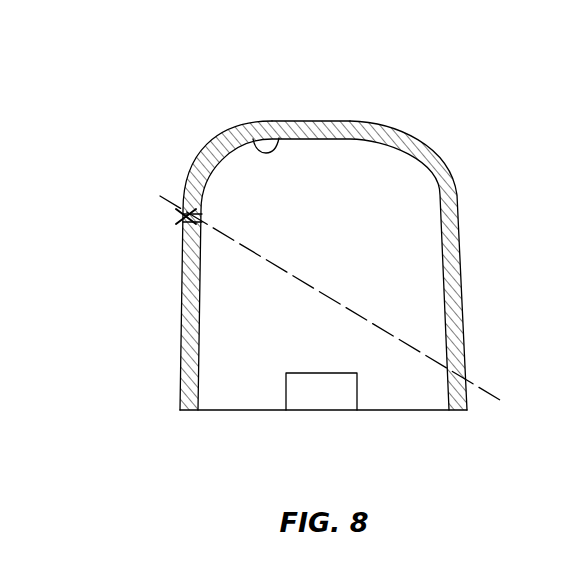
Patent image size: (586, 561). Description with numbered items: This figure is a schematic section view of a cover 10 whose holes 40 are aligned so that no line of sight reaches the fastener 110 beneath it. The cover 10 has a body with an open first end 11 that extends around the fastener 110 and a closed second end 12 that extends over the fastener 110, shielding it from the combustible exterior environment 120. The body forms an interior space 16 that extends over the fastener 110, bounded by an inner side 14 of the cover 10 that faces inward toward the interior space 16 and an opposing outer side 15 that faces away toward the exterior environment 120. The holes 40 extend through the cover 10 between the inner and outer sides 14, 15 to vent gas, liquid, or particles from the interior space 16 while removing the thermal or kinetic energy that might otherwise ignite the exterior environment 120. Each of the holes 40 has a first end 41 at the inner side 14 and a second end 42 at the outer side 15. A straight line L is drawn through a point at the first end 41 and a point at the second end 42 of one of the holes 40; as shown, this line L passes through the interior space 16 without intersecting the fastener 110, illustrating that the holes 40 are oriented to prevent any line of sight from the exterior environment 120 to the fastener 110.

The cover 10 is at (440, 113).
The first end 11 is at (410, 409).
The second end 12 is at (333, 120).
The inner side 14 is at (247, 138).
The outer side 15 is at (292, 120).
The interior space 16 is at (412, 212).
The holes 40 is at (181, 214).
The first end 41 is at (204, 218).
The second end 42 is at (180, 218).
The fastener 110 is at (320, 392).
The exterior environment 120 is at (34, 124).
The straight line L is at (432, 352).